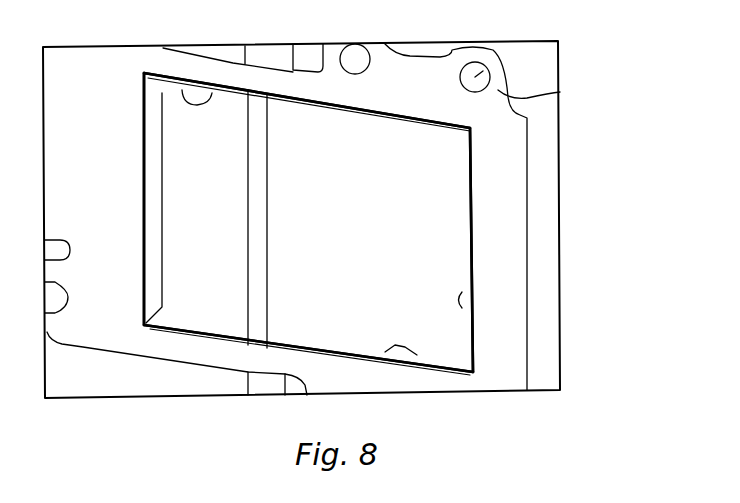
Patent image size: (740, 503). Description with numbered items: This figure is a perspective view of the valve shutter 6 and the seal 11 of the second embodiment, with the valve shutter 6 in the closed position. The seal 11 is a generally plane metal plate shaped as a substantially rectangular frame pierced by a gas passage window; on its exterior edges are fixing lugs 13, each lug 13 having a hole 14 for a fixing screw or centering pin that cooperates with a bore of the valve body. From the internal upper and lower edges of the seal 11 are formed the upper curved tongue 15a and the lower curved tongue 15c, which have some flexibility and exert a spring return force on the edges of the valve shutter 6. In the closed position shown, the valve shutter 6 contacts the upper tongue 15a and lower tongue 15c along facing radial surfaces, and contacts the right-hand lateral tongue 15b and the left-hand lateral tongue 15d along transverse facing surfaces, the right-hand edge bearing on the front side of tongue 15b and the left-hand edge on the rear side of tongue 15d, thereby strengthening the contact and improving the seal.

The valve shutter 6 is at (428, 250).
The seal 11 is at (493, 188).
The fixing lug 13 is at (560, 92).
The hole 14 is at (472, 70).
The upper curved tongue 15a is at (212, 95).
The right-hand lateral tongue 15b is at (460, 300).
The lower curved tongue 15c is at (423, 366).
The left-hand lateral tongue 15d is at (162, 173).